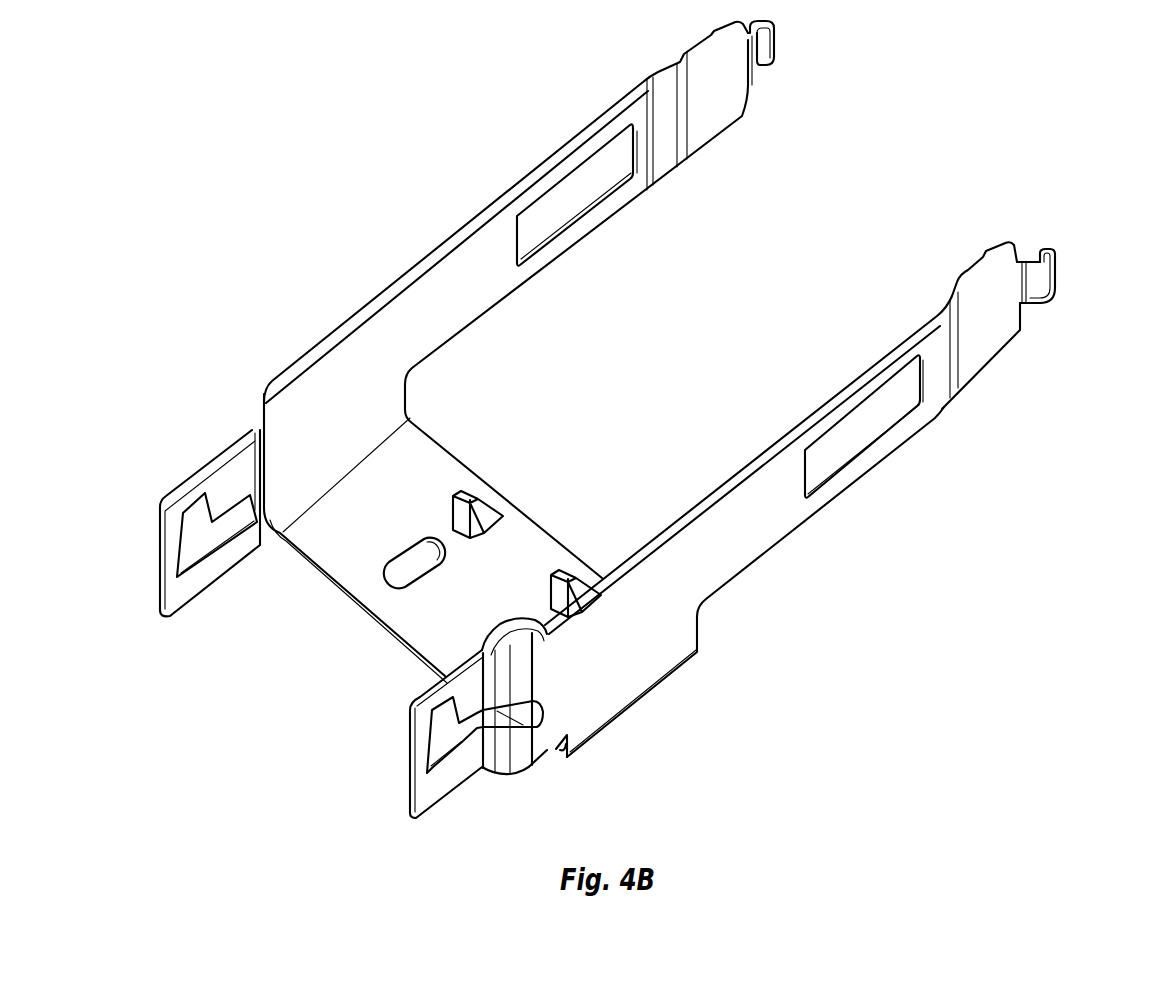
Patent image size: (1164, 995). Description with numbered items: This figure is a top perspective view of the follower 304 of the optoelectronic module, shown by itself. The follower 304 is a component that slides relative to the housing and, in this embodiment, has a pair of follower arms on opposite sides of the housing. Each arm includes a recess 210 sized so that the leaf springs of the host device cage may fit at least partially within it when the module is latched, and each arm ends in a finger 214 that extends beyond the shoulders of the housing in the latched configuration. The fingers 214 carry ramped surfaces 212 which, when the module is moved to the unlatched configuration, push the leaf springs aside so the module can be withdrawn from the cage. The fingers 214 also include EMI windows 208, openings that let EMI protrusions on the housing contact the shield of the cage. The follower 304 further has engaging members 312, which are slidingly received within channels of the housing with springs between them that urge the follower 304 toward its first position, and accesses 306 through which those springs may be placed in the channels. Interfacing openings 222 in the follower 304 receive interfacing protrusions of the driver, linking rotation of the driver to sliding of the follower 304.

The follower 304 is at (659, 431).
The access 306 is at (382, 578).
The engaging member 312 is at (468, 495).
The EMI window 208 is at (845, 437).
The recess 210 is at (985, 328).
The ramped surface 212 is at (1037, 288).
The finger 214 is at (1060, 258).
The interfacing opening 222 is at (448, 750).